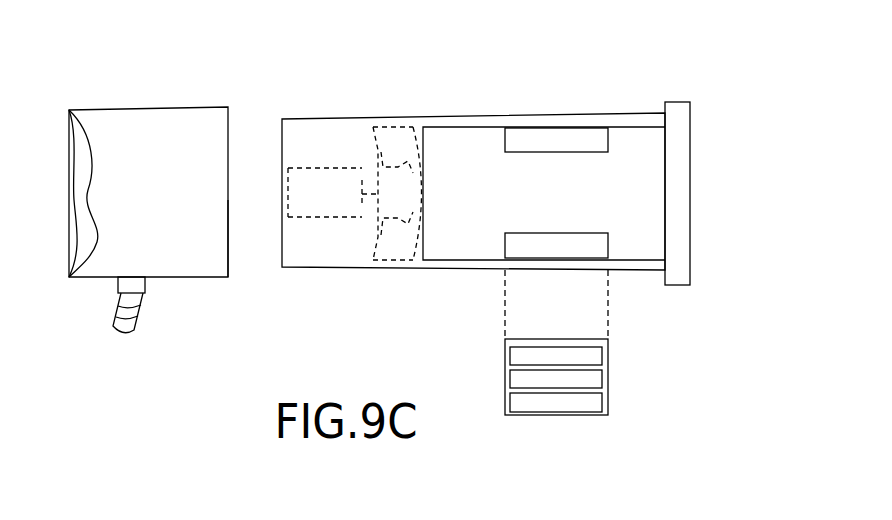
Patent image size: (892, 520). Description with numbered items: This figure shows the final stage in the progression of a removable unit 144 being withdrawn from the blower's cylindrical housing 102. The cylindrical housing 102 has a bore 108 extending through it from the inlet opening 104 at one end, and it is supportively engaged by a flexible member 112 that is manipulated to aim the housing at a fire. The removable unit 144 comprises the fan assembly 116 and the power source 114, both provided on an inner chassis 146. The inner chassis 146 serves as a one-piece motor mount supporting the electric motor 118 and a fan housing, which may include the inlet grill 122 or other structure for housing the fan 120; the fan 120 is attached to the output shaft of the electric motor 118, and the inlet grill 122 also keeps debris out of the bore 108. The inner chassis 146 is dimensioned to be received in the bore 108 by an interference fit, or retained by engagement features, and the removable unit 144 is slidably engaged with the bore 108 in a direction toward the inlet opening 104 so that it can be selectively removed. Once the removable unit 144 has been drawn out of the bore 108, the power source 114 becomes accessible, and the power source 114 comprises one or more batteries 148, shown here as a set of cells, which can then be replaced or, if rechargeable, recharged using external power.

The cylindrical housing 102 is at (223, 278).
The inlet opening 104 is at (228, 263).
The bore 108 is at (181, 201).
The flexible member 112 is at (132, 313).
The power source 114 is at (568, 151).
The fan assembly 116 is at (354, 262).
The electric motor 118 is at (327, 201).
The fan 120 is at (403, 153).
The inlet grill 122 is at (690, 183).
The removable unit 144 is at (475, 299).
The inner chassis 146 is at (445, 270).
The batteries 148 is at (543, 358).